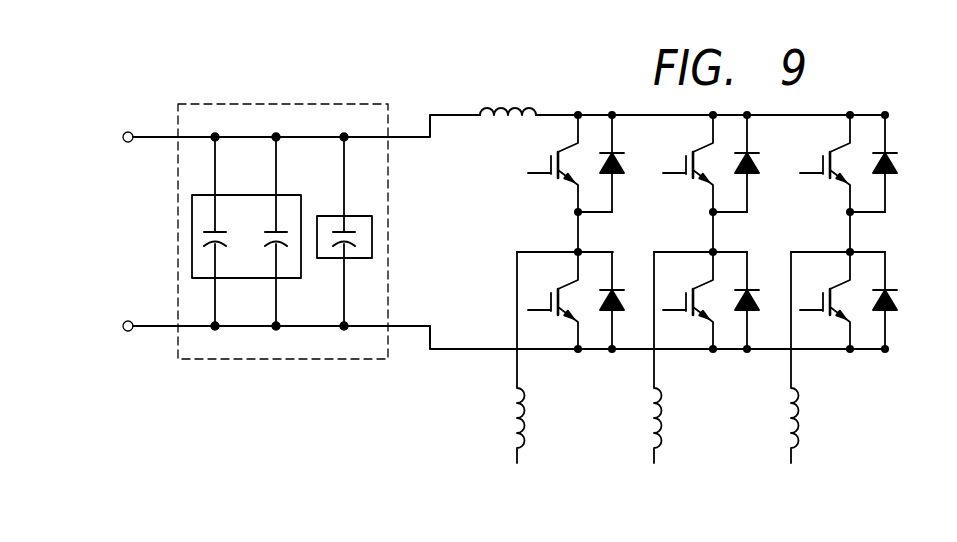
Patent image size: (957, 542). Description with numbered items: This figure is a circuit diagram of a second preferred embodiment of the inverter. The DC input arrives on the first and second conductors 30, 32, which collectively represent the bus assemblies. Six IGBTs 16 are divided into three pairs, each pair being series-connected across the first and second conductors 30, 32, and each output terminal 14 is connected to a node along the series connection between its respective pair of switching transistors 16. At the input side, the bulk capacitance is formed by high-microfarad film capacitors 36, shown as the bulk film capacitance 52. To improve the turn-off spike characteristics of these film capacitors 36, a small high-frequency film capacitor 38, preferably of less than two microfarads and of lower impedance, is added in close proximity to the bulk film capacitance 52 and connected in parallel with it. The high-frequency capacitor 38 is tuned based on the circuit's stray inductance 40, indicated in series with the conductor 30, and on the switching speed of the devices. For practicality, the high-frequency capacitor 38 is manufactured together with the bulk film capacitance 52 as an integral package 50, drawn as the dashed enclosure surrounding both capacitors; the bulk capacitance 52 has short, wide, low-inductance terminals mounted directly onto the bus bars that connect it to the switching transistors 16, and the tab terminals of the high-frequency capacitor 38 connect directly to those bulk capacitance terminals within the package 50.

The output terminal 14 is at (520, 373).
The IGBT 16 is at (840, 152).
The first conductor 30 is at (450, 115).
The second conductor 32 is at (483, 350).
The high-microfarad film capacitor 36 is at (274, 228).
The high-frequency film capacitor 38 is at (357, 238).
The stray inductance 40 is at (497, 116).
The integral package 50 is at (332, 104).
The bulk film capacitance 52 is at (258, 280).